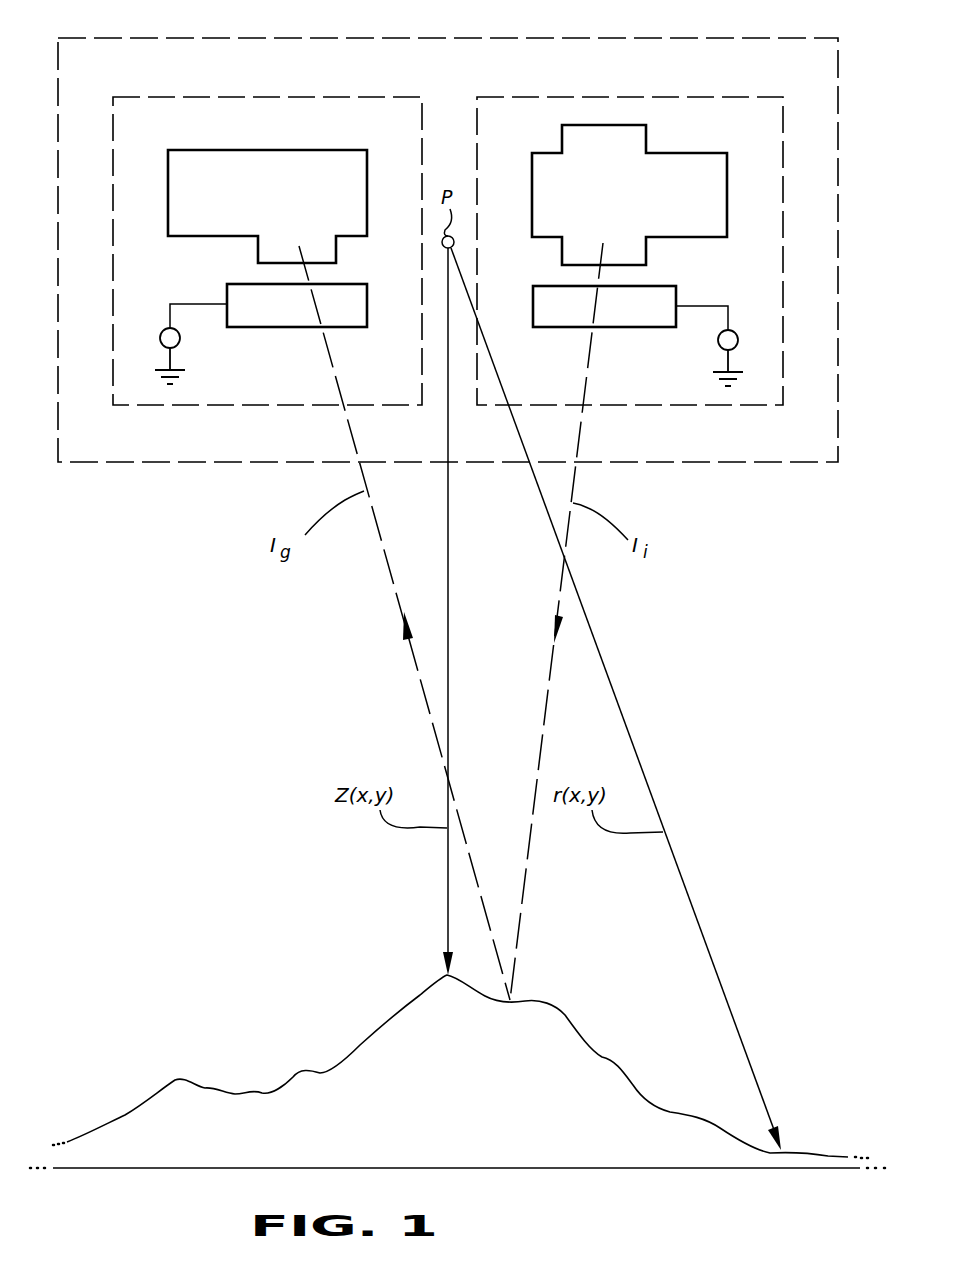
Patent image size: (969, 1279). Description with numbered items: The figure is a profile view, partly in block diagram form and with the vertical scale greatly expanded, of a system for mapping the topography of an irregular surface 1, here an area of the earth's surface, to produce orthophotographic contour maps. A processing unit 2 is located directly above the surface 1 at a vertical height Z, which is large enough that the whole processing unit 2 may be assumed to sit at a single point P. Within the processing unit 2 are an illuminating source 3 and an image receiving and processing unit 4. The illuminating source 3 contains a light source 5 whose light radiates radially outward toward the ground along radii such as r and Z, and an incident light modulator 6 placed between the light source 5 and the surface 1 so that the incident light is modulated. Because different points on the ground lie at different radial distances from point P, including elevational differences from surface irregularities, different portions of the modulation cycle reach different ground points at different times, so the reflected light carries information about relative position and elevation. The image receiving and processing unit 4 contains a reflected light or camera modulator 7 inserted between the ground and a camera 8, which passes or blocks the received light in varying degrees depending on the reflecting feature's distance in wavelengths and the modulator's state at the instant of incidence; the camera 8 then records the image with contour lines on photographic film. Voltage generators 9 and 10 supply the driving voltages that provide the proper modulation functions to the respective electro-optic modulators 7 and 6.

The irregular surface 1 is at (348, 1038).
The processing unit 2 is at (408, 32).
The illuminating source 3 is at (588, 92).
The image receiving and processing unit 4 is at (246, 92).
The light source 5 is at (532, 200).
The light modulator 6 is at (533, 306).
The light modulator 7 is at (367, 305).
The camera 8 is at (368, 200).
The voltage generator 9 is at (161, 333).
The voltage generator 10 is at (737, 333).